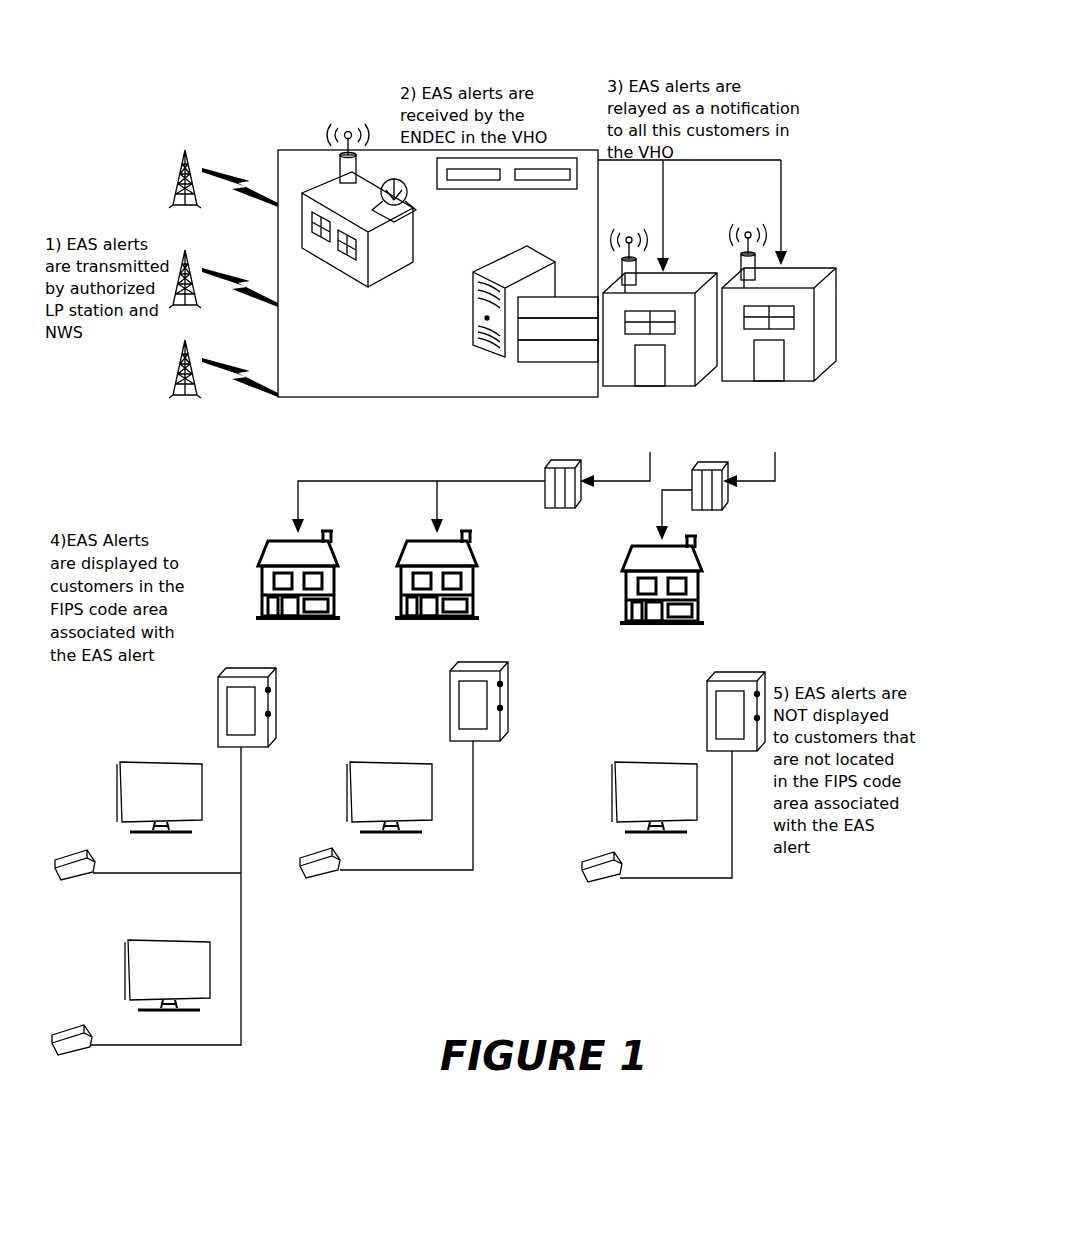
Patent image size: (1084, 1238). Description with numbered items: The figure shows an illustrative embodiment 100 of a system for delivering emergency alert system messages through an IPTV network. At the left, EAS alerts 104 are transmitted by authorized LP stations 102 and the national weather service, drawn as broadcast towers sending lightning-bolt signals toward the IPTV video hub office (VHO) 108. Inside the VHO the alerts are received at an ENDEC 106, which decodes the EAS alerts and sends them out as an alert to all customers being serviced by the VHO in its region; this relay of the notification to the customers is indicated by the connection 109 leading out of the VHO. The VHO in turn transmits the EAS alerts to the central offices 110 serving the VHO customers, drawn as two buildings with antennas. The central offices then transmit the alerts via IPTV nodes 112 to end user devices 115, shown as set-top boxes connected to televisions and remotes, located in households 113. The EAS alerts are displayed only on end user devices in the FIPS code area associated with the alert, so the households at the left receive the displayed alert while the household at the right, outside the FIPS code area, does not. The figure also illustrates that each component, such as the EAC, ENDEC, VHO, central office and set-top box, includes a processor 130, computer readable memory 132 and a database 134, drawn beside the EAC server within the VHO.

The illustrative embodiment 100 is at (283, 100).
The authorized LP stations 102 is at (176, 192).
The EAS alerts 104 is at (230, 176).
The ENDEC 106 is at (558, 168).
The IPTV video hub office (VHO) 108 is at (418, 394).
The notification relay to central offices 109 is at (688, 152).
The central offices 110 is at (808, 272).
The IPTV nodes 112 is at (718, 497).
The households 113 is at (337, 600).
The end user devices 115 is at (272, 718).
The processor 130 is at (548, 297).
The computer readable memory 132 is at (520, 338).
The database 134 is at (565, 364).